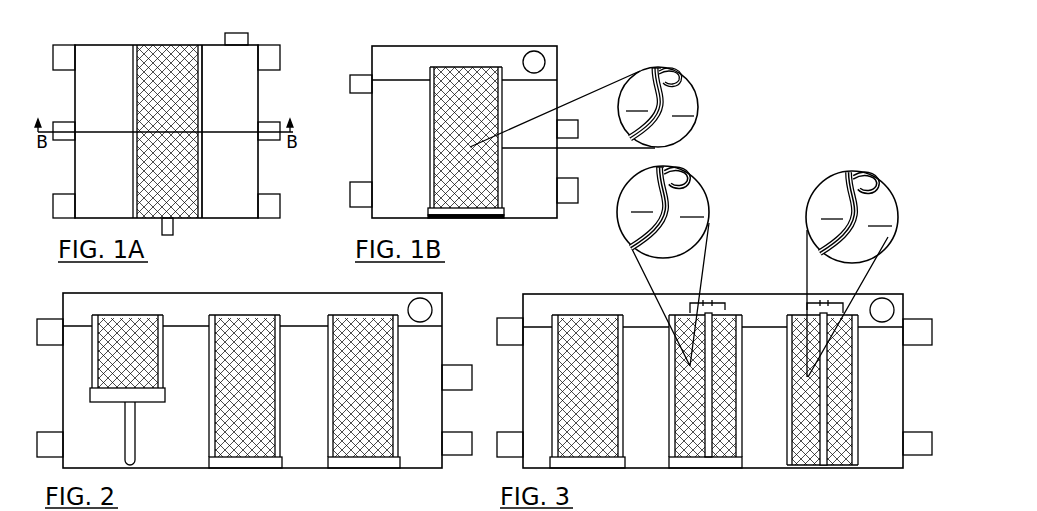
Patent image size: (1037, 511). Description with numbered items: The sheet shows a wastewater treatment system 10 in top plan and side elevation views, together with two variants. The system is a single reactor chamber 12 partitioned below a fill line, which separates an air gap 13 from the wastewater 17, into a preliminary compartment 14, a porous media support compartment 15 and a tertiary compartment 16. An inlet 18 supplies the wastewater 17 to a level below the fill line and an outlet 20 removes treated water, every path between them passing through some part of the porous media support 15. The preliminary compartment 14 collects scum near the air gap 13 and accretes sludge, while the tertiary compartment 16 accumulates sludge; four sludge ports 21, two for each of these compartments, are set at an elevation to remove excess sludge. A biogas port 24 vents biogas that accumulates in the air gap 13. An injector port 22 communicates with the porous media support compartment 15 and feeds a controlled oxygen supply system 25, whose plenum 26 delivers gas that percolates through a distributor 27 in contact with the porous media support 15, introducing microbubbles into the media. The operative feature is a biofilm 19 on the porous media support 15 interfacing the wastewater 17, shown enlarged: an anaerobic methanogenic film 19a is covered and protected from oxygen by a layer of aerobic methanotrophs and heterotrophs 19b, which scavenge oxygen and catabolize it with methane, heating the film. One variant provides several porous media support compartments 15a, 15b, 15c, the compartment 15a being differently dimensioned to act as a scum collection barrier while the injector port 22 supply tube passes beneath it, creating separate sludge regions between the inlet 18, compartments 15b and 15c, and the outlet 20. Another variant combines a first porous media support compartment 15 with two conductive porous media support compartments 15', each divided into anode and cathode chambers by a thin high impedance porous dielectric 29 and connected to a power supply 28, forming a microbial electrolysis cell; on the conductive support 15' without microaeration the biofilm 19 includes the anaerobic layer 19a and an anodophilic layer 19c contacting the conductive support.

In FIG. 1A, the wastewater treatment system 10 is at (262, 29).
In FIG. 1B, the wastewater treatment system 10 is at (566, 28).
In FIG. 1A, the reactor chamber 12 is at (84, 45).
In FIG. 1B, the reactor chamber 12 is at (372, 130).
In FIG. 2, the reactor chamber 12 is at (252, 380).
In FIG. 3, the reactor chamber 12 is at (713, 381).
In FIG. 1B, the air gap 13 is at (392, 77).
In FIG. 2, the air gap 13 is at (177, 322).
In FIG. 3, the air gap 13 is at (636, 322).
In FIG. 1A, the preliminary compartment 14 is at (89, 109).
In FIG. 1B, the preliminary compartment 14 is at (389, 131).
In FIG. 1A, the porous media support compartment 15 is at (169, 131).
In FIG. 1B, the porous media support compartment 15 is at (466, 137).
In FIG. 3, the porous media support compartment 15 is at (587, 386).
In FIG. 3, the conductive porous media support compartment 15' is at (763, 390).
In FIG. 2, the porous media support compartment 15a is at (111, 369).
In FIG. 2, the porous media support compartment 15b is at (226, 387).
In FIG. 2, the porous media support compartment 15c is at (343, 387).
In FIG. 1A, the tertiary compartment 16 is at (221, 109).
In FIG. 1B, the tertiary compartment 16 is at (519, 191).
In FIG. 1B, the wastewater 17 is at (392, 101).
In FIG. 2, the wastewater 17 is at (177, 354).
In FIG. 3, the wastewater 17 is at (636, 354).
In FIG. 1A, the inlet 18 is at (57, 122).
In FIG. 1B, the inlet 18 is at (357, 76).
In FIG. 2, the inlet 18 is at (40, 342).
In FIG. 3, the inlet 18 is at (500, 342).
In FIG. 1B, the biofilm 19 is at (627, 140).
In FIG. 1B, the anaerobic methanogenic microbial film 19a is at (688, 74).
In FIG. 3, the anaerobic methanogenic microbial film 19a is at (688, 176).
In FIG. 1B, the layer of aerobic methanotrophs and heterotrophs 19b is at (658, 68).
In FIG. 3, the layer of aerobic methanotrophs and heterotrophs 19b is at (663, 167).
In FIG. 3, the anodophilic layer 19c is at (632, 233).
In FIG. 1A, the outlet 20 is at (272, 124).
In FIG. 1B, the outlet 20 is at (575, 121).
In FIG. 2, the outlet 20 is at (447, 387).
In FIG. 3, the outlet 20 is at (907, 342).
In FIG. 1A, the sludge ports 21 is at (56, 48).
In FIG. 1B, the sludge ports 21 is at (356, 183).
In FIG. 2, the sludge ports 21 is at (40, 454).
In FIG. 3, the sludge ports 21 is at (500, 454).
In FIG. 1A, the injector port 22 is at (175, 228).
In FIG. 2, the injector port 22 is at (125, 438).
In FIG. 1A, the biogas port 24 is at (228, 36).
In FIG. 1B, the biogas port 24 is at (531, 73).
In FIG. 2, the biogas port 24 is at (422, 322).
In FIG. 3, the biogas port 24 is at (884, 322).
In FIG. 1B, the controlled oxygen supply system 25 is at (430, 209).
In FIG. 2, the controlled oxygen supply system 25 is at (160, 394).
In FIG. 3, the controlled oxygen supply system 25 is at (672, 463).
In FIG. 1B, the plenum 26 is at (473, 216).
In FIG. 1B, the distributor 27 is at (497, 216).
In FIG. 3, the power supply 28 is at (807, 300).
In FIG. 3, the high impedance porous dielectric 29 is at (832, 442).